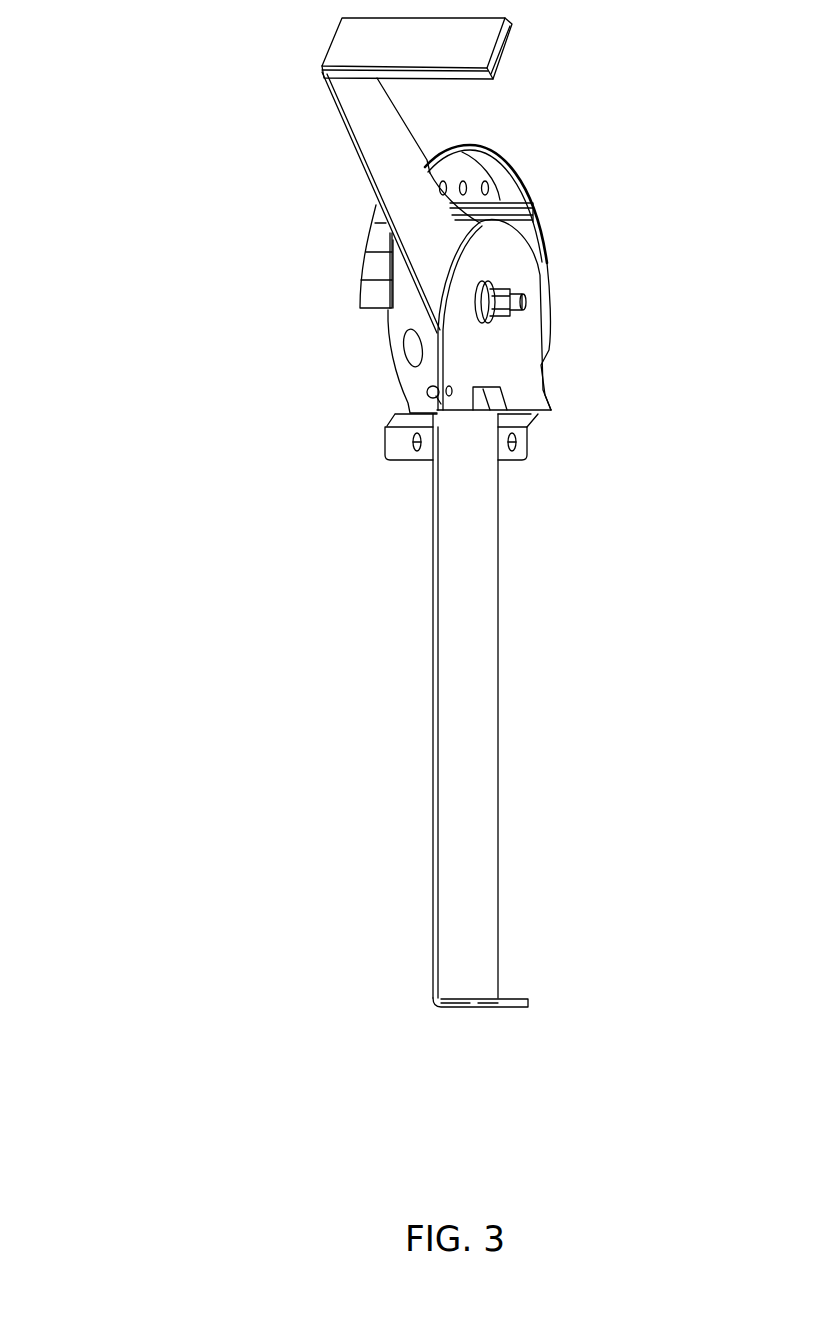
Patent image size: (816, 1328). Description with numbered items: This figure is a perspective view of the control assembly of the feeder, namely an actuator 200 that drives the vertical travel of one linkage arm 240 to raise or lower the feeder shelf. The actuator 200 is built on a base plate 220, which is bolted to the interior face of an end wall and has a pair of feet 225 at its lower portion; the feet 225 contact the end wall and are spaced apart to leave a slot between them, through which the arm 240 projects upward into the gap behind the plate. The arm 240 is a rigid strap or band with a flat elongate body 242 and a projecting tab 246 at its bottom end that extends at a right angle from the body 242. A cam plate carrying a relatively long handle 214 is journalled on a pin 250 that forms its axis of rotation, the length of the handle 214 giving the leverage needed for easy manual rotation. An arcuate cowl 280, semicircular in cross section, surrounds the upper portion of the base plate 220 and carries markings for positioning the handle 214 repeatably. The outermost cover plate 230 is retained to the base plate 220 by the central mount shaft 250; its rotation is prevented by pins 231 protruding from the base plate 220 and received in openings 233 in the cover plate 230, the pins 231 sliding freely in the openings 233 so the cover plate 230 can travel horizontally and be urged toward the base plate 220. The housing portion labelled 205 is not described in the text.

The actuator 200 is at (129, 129).
The handle 214 is at (377, 128).
The housing 205 is at (502, 257).
The pin 250 is at (526, 302).
The cover plate 230 is at (510, 357).
The cowl 280 is at (370, 267).
The base plate 220 is at (397, 318).
The pins 231 is at (427, 392).
The openings 233 is at (440, 402).
The feet 225 is at (403, 448).
The linkage arm 240 is at (480, 700).
The body 242 is at (477, 815).
The projecting tab 246 is at (515, 998).